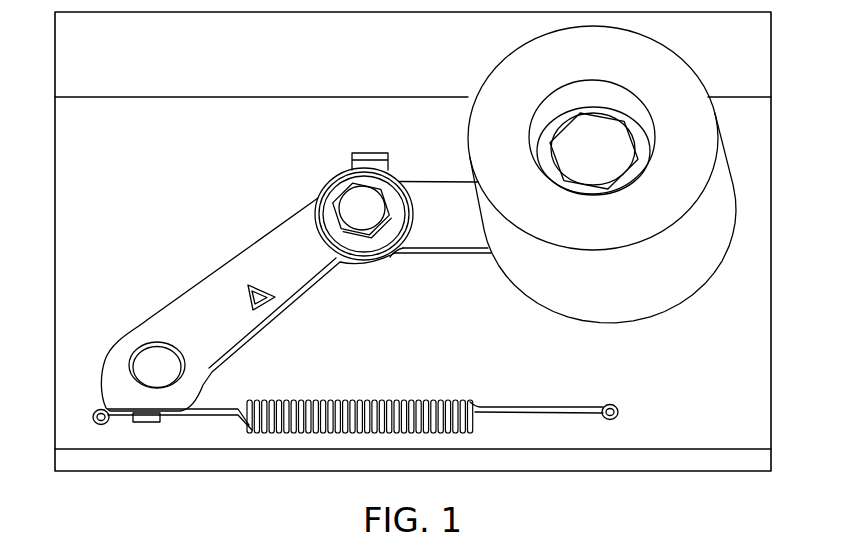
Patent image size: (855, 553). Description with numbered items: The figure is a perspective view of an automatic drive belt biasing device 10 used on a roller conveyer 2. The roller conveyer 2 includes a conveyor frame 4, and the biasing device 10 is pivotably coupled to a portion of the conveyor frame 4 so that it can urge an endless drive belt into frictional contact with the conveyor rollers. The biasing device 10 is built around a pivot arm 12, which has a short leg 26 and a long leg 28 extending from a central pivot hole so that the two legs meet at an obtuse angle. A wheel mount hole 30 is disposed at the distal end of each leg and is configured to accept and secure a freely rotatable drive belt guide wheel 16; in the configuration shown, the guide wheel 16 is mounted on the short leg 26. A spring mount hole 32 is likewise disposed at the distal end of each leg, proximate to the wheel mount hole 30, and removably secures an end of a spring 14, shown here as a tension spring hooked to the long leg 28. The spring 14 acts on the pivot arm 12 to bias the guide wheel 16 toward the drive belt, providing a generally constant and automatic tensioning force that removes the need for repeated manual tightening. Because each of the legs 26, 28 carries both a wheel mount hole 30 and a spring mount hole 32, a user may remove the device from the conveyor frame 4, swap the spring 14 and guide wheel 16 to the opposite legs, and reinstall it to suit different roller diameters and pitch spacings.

The roller conveyer 2 is at (105, 77).
The conveyor frame 4 is at (107, 151).
The automatic drive member biasing device 10 is at (275, 162).
The pivot arm 12 is at (252, 297).
The spring 14 is at (397, 400).
The drive belt guide wheel 16 is at (682, 82).
The short leg 26 is at (445, 197).
The long leg 28 is at (207, 282).
The wheel mount hole 30 is at (173, 348).
The spring mount hole 32 is at (98, 410).